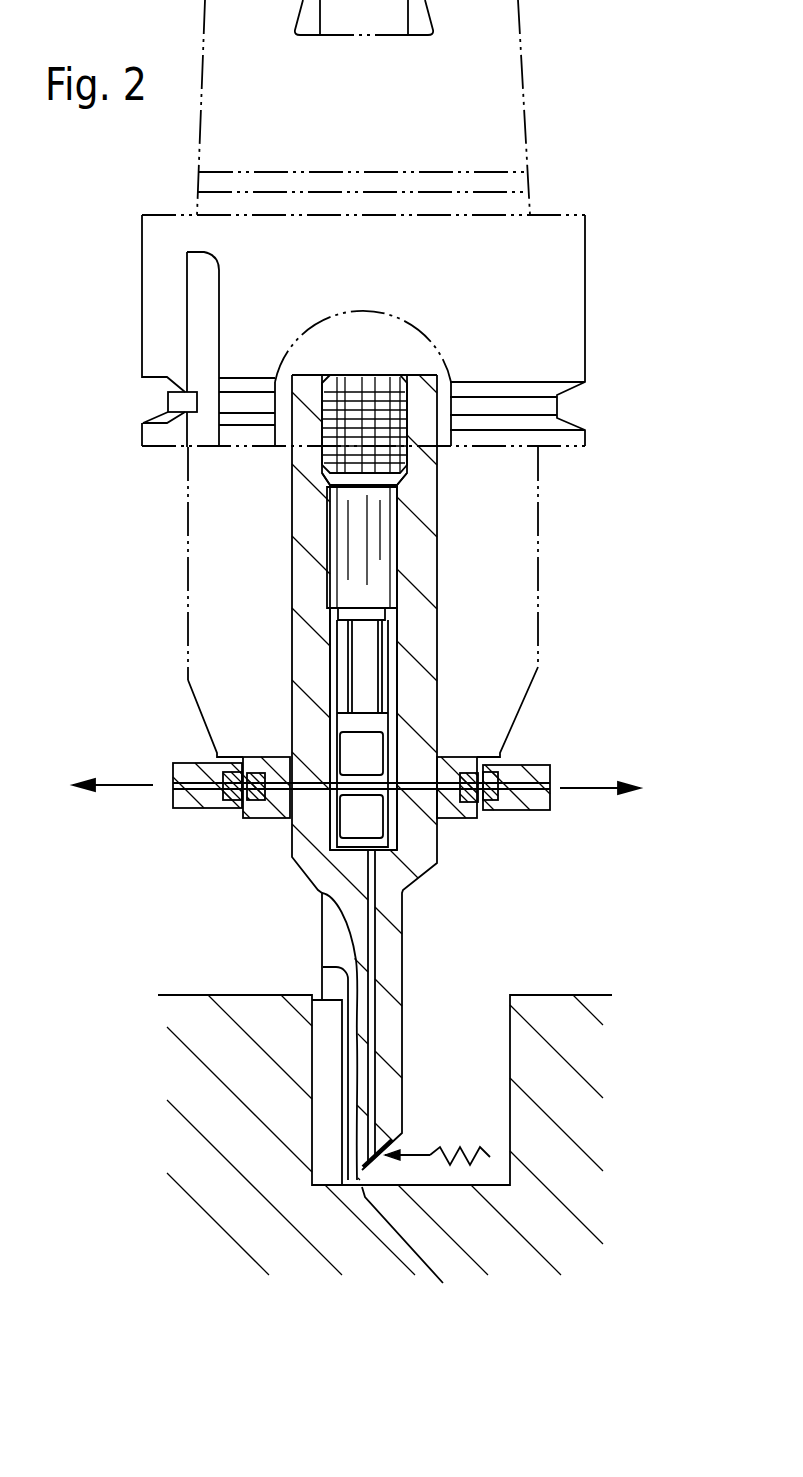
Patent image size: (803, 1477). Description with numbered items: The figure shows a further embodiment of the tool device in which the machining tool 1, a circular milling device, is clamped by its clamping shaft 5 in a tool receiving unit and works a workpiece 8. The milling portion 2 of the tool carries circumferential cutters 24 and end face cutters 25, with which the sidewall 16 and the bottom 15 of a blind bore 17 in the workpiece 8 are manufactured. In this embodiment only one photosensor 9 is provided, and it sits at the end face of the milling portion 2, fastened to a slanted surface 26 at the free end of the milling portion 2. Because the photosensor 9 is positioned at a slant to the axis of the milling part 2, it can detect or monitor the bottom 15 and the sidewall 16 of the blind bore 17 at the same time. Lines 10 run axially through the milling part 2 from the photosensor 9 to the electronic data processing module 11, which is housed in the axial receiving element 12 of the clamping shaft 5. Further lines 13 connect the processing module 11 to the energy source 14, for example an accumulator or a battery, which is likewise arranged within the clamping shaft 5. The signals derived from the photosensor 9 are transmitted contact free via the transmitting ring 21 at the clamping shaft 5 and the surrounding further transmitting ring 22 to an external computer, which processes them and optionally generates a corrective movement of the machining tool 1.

The machining tool 1 is at (383, 1101).
The milling portion 2 is at (390, 1052).
The clamping shaft 5 is at (417, 683).
The workpiece 8 is at (208, 1150).
The photosensor 9 is at (393, 1145).
The lines 10 is at (372, 947).
The electronic data processing module 11 is at (348, 755).
The axial receiving element 12 is at (390, 728).
The lines 13 is at (350, 663).
The energy source 14 is at (350, 533).
The bottom of the blind bore 15 is at (483, 1183).
The sidewall of the blind bore 16 is at (510, 1015).
The blind bore 17 is at (438, 1013).
The transmitting ring 21 is at (213, 765).
The further transmitting ring 22 is at (268, 803).
The circumferential cutters 24 is at (310, 1030).
The end face cutters 25 is at (312, 1187).
The slanted surface 26 is at (411, 1256).